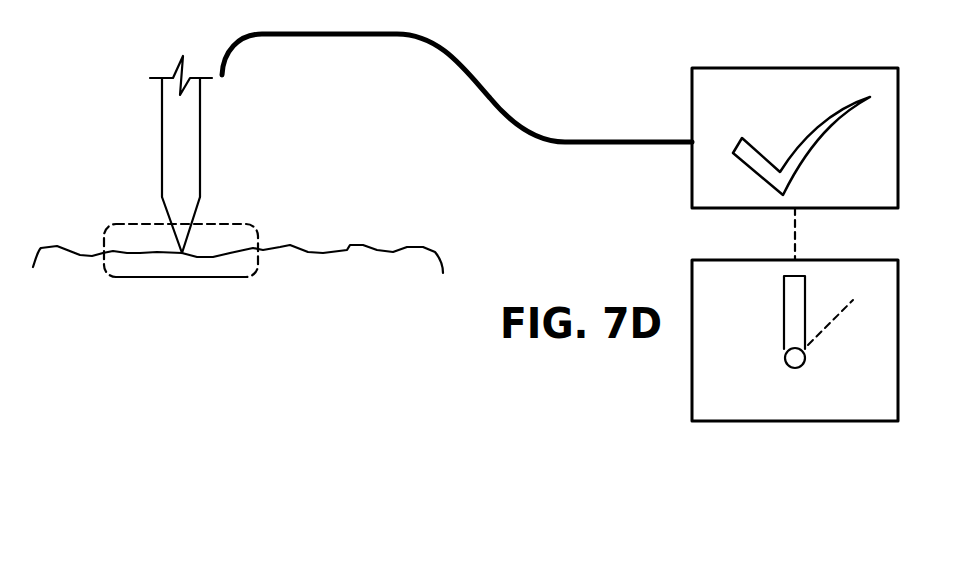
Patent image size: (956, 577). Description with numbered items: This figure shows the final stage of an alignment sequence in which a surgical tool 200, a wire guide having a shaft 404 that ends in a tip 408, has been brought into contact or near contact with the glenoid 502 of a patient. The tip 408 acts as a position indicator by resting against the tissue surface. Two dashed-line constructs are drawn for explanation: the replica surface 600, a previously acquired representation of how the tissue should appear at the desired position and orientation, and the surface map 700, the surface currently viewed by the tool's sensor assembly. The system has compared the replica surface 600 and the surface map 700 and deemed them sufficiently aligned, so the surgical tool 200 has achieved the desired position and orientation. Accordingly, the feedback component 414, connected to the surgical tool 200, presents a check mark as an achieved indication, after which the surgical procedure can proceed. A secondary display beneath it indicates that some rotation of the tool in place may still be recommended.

The surgical tool 200 is at (132, 135).
The shaft 404 is at (200, 152).
The tip 408 is at (182, 253).
The glenoid 502 is at (435, 252).
The replica surface 600 is at (168, 277).
The surface map 700 is at (227, 223).
The feedback component 414 is at (752, 68).